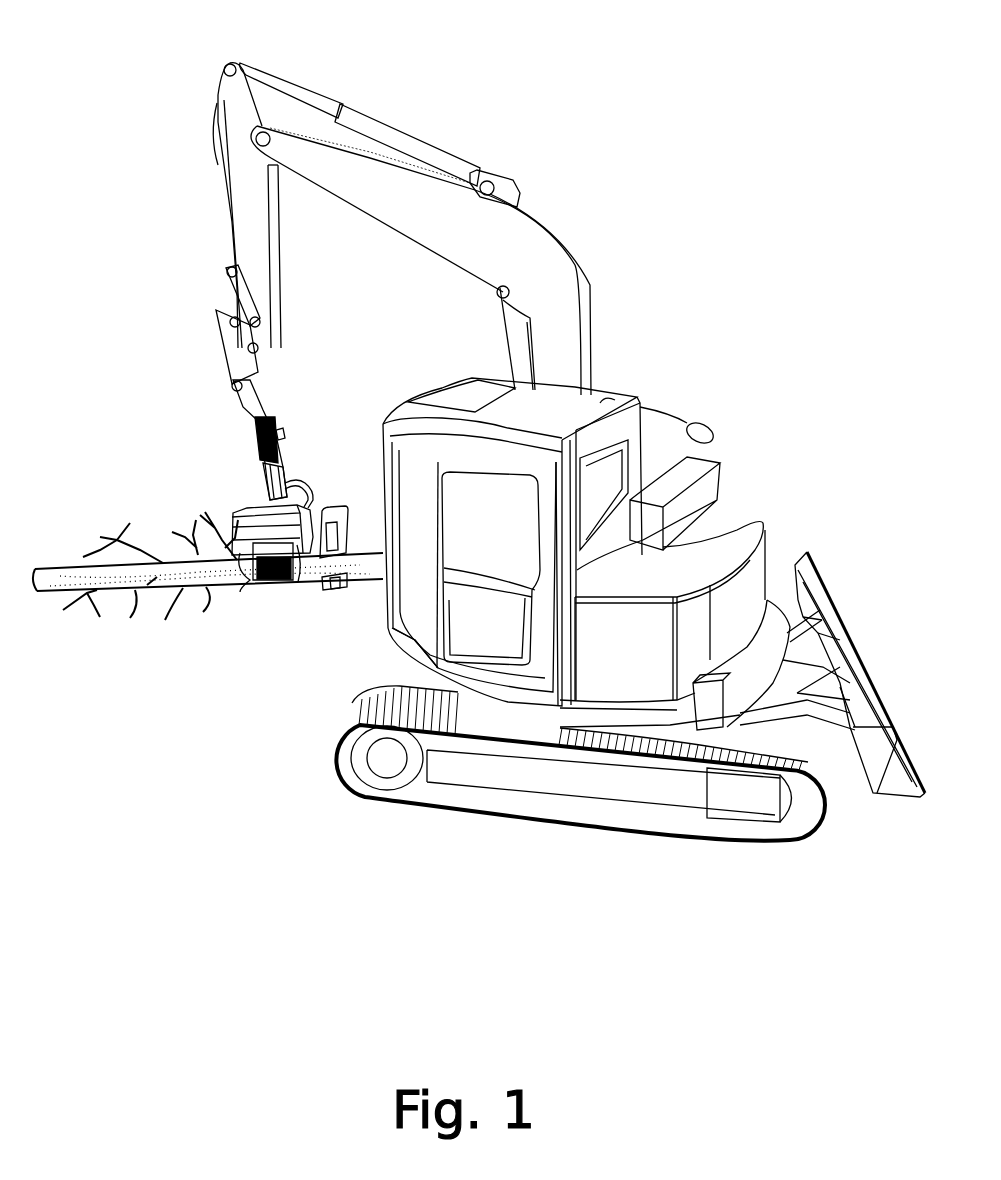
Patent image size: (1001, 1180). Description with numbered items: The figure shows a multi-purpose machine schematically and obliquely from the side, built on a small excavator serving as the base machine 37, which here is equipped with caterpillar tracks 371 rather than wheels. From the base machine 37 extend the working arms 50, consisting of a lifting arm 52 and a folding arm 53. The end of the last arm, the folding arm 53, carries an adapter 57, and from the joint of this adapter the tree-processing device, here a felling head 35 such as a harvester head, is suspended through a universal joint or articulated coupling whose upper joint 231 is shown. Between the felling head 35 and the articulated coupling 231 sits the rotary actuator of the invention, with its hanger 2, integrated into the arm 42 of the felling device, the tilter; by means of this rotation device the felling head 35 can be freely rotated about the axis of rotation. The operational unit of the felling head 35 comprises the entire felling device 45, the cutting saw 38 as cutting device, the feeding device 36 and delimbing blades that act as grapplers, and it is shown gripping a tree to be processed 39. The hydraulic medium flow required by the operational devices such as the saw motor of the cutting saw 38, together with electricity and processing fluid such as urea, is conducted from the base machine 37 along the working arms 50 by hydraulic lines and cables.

The working arms 50 is at (400, 90).
The lifting arm 52 is at (380, 222).
The folding arm 53 is at (245, 245).
The adapter 57 is at (228, 405).
The upper joint 231 is at (257, 440).
The felling device 45 is at (258, 470).
The arm 42 is at (283, 485).
The hanger 2 is at (285, 436).
The felling head 35 is at (323, 500).
The feeding device 36 is at (272, 588).
The base machine 37 is at (600, 405).
The cutting saw 38 is at (332, 591).
The tree to be processed 39 is at (349, 508).
The caterpillar track 371 is at (557, 812).